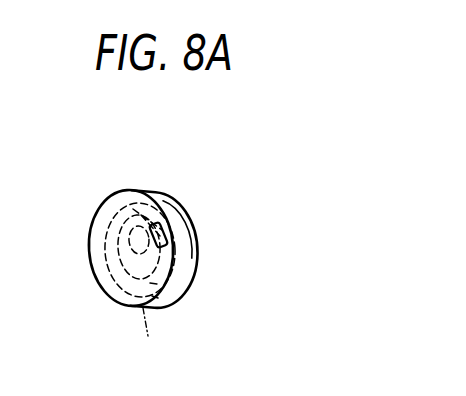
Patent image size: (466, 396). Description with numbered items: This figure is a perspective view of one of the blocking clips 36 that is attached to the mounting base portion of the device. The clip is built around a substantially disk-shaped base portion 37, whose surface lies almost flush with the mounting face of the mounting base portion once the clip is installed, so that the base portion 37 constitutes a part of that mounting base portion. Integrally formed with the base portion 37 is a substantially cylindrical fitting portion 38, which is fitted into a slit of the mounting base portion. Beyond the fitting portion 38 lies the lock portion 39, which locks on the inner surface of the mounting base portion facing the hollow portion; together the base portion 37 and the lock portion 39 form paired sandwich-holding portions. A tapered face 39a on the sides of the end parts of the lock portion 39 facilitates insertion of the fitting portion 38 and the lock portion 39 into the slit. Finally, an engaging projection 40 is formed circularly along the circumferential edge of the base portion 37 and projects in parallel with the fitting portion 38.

The blocking clip 36 is at (153, 207).
The base portion 37 is at (100, 262).
The fitting portion 38 is at (146, 337).
The lock portion 39 is at (193, 224).
The tapered face 39a is at (195, 242).
The engaging projection 40 is at (190, 274).